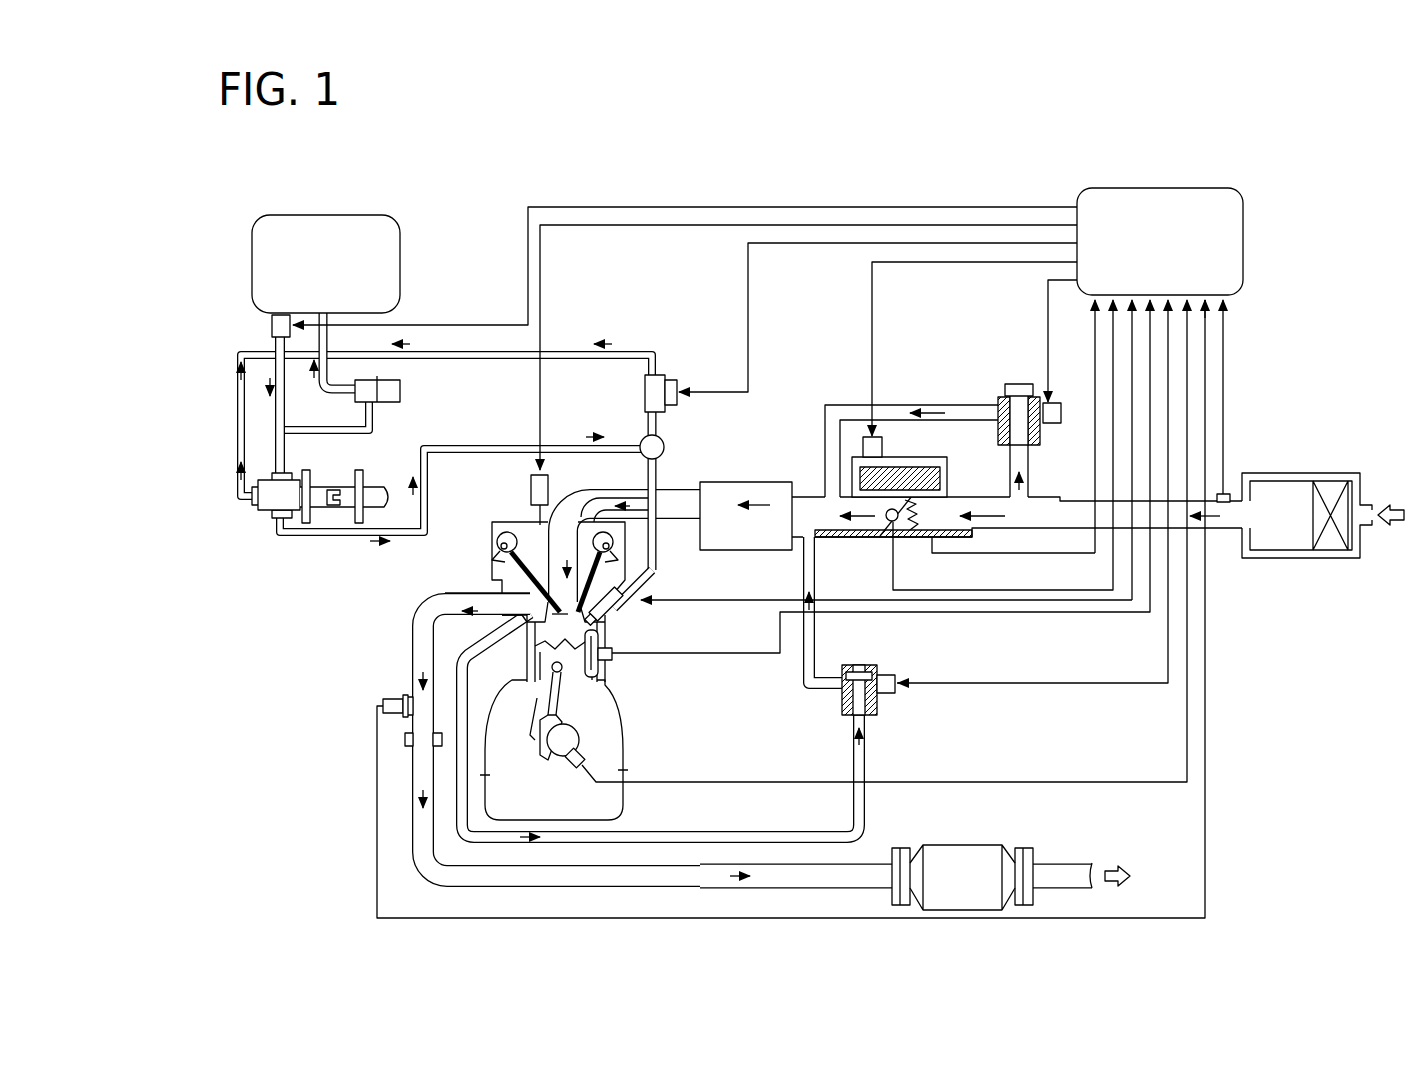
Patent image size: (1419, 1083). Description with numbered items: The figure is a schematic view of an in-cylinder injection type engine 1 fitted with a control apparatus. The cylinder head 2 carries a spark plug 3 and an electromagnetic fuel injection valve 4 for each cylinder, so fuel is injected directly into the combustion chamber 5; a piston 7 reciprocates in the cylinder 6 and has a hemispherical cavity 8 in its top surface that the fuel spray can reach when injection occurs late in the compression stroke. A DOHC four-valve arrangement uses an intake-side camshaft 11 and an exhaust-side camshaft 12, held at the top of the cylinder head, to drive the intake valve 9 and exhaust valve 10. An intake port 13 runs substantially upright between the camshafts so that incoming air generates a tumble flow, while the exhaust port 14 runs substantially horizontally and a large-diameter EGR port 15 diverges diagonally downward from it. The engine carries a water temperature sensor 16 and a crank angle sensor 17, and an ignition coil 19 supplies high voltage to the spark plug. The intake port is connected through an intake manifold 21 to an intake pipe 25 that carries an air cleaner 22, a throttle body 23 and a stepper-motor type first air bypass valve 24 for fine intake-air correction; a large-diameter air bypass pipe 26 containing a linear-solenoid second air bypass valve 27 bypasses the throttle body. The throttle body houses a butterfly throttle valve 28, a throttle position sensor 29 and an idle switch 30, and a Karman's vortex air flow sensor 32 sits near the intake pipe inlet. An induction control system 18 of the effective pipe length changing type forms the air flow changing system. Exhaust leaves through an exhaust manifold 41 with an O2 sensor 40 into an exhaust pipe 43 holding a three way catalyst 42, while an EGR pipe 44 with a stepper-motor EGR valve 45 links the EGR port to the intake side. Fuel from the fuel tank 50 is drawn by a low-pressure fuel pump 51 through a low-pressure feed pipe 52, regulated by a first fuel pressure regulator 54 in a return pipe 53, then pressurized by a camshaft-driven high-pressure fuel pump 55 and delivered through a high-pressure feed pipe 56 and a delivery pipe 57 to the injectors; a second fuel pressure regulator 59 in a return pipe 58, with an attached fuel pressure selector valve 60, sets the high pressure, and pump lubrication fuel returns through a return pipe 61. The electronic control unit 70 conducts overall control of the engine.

The engine 1 is at (630, 742).
The cylinder head 2 is at (500, 520).
The spark plug 3 is at (520, 588).
The electromagnetic fuel injection valve 4 is at (640, 609).
The combustion chamber 5 is at (524, 644).
The cylinder 6 is at (604, 690).
The piston 7 is at (516, 674).
The hemispherical cavity 8 is at (600, 641).
The intake valve 9 is at (660, 584).
The exhaust valve 10 is at (496, 548).
The intake-side camshaft 11 is at (620, 542).
The exhaust-side camshaft 12 is at (380, 482).
The intake port 13 is at (553, 512).
The exhaust port 14 is at (515, 598).
The EGR port 15 is at (468, 628).
The water temperature sensor 16 is at (615, 661).
The crank angle sensor 17 is at (590, 766).
The induction control system 18 is at (755, 482).
The ignition coil 19 is at (531, 486).
The intake manifold 21 is at (690, 490).
The air cleaner 22 is at (1320, 482).
The throttle body 23 is at (830, 540).
The first air bypass valve 24 is at (886, 450).
The intake pipe 25 is at (1038, 496).
The air bypass pipe 26 is at (937, 405).
The second air bypass valve 27 is at (1018, 384).
The throttle valve 28 is at (880, 538).
The throttle position sensor 29 is at (920, 512).
The idle switch 30 is at (896, 522).
The air flow sensor 32 is at (1223, 512).
The O2 sensor 40 is at (385, 700).
The exhaust manifold 41 is at (410, 640).
The three way catalyst 42 is at (950, 847).
The exhaust pipe 43 is at (870, 862).
The EGR pipe 44 is at (852, 805).
The EGR valve 45 is at (888, 714).
The fuel tank 50 is at (403, 236).
The low-pressure fuel pump 51 is at (268, 326).
The low-pressure feed pipe 52 is at (297, 471).
The return pipe 53 is at (376, 430).
The first fuel pressure regulator 54 is at (401, 390).
The high-pressure fuel pump 55 is at (258, 516).
The high-pressure feed pipe 56 is at (304, 538).
The delivery pipe 57 is at (665, 447).
The return pipe 58 is at (562, 350).
The second fuel pressure regulator 59 is at (645, 391).
The fuel pressure selector valve 60 is at (680, 384).
The return pipe 61 is at (237, 430).
The electronic control unit 70 is at (1243, 210).